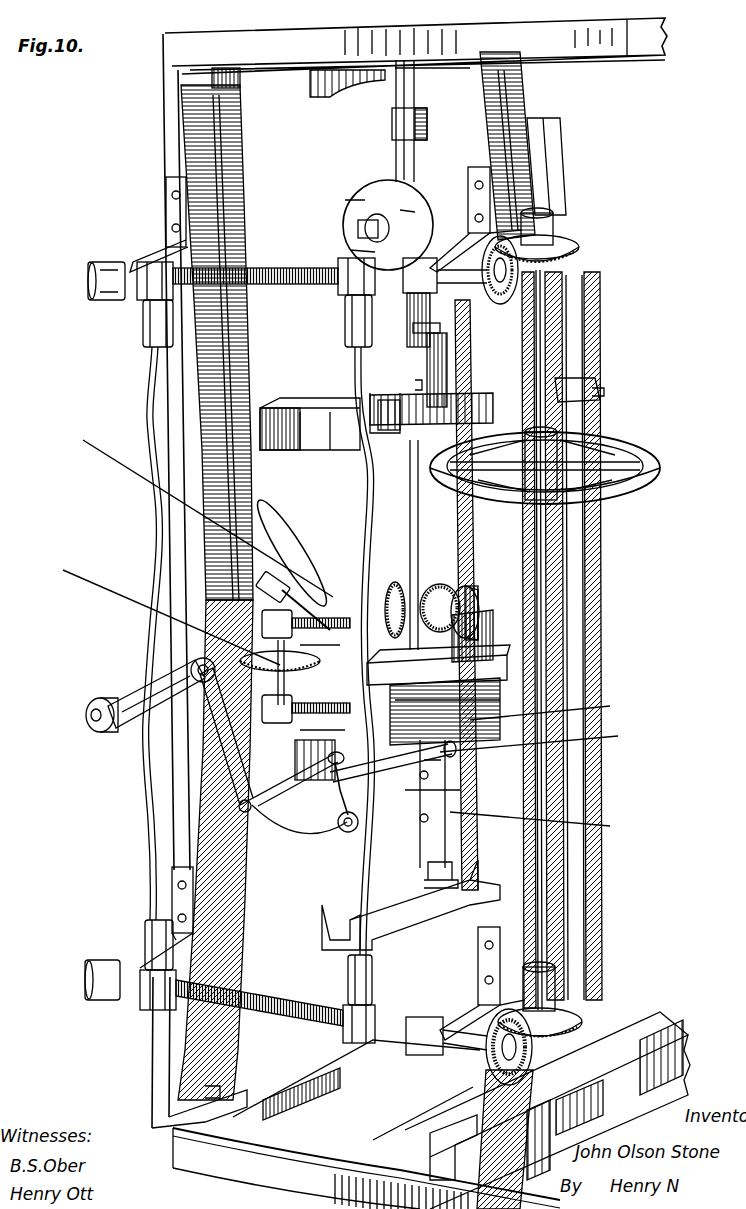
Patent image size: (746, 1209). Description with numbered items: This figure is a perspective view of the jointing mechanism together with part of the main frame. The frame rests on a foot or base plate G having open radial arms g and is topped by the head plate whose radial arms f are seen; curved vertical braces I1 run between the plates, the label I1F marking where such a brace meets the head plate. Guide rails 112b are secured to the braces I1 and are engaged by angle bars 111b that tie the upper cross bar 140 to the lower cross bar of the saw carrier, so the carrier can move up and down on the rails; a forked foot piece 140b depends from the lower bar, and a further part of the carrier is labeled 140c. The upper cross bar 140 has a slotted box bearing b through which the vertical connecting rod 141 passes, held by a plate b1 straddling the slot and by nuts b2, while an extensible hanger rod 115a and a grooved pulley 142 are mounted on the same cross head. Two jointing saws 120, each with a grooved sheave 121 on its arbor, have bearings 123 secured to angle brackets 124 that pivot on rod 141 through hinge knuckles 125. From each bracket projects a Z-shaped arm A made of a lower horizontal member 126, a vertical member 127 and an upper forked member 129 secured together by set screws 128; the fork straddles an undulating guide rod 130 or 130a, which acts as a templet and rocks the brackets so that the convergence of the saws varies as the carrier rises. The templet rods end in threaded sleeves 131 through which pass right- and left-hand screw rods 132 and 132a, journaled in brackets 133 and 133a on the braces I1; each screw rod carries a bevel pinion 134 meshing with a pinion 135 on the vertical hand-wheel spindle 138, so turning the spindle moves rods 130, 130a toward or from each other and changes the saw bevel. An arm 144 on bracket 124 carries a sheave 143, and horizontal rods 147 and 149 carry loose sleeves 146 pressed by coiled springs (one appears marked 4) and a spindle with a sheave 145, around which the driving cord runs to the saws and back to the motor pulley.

The radial arm of head plate f is at (416, 57).
The radial arm of base plate g is at (366, 1154).
The foot or base plate G is at (640, 1015).
The vertical curved brace I1 is at (163, 105).
The brace at head plate I1F is at (590, 50).
The guide rail 112b is at (548, 172).
The angle bar 111b is at (568, 568).
The extensible hanger rod 115a is at (390, 136).
The sheave or grooved pulley 142 is at (365, 214).
The bracket 133a is at (130, 262).
The bracket 133 is at (440, 262).
The screw rod 132a is at (308, 267).
The screw rod 132 is at (298, 1004).
The interiorly threaded sleeve 131 is at (150, 302).
The guide rod 130 is at (160, 575).
The guide rod 130a is at (350, 364).
The vertical spindle 138 is at (580, 245).
The bevel pinion 134 is at (496, 305).
The bevel pinion 135 is at (580, 1030).
The slotted box bearing b is at (445, 388).
The plate b1 is at (370, 405).
The nuts b2 is at (452, 404).
The upper cross bar 140 is at (318, 452).
The forked foot piece 140b is at (330, 915).
The block 140c is at (295, 760).
The connecting rod 141 is at (420, 528).
The sheave or grooved pulley 143 is at (303, 530).
The arm 144 is at (293, 598).
The sheave or grooved pulley 145 is at (256, 652).
The sleeve 146 is at (306, 662).
The horizontal rod 147 is at (322, 724).
The horizontal rod 149 is at (320, 644).
The rod 4 is at (314, 633).
The jointing saw 120 is at (395, 600).
The sheave or grooved pulley 121 is at (378, 578).
The bearing 123 is at (488, 628).
The angle bracket 124 is at (401, 752).
The sleeve bearing or hinge knuckle 125 is at (400, 864).
The lower horizontal member 126 is at (395, 750).
The vertical member 127 is at (218, 772).
The set screw 128 is at (94, 706).
The upper forked horizontal member 129 is at (152, 688).
The Z-shaped arm A is at (365, 595).